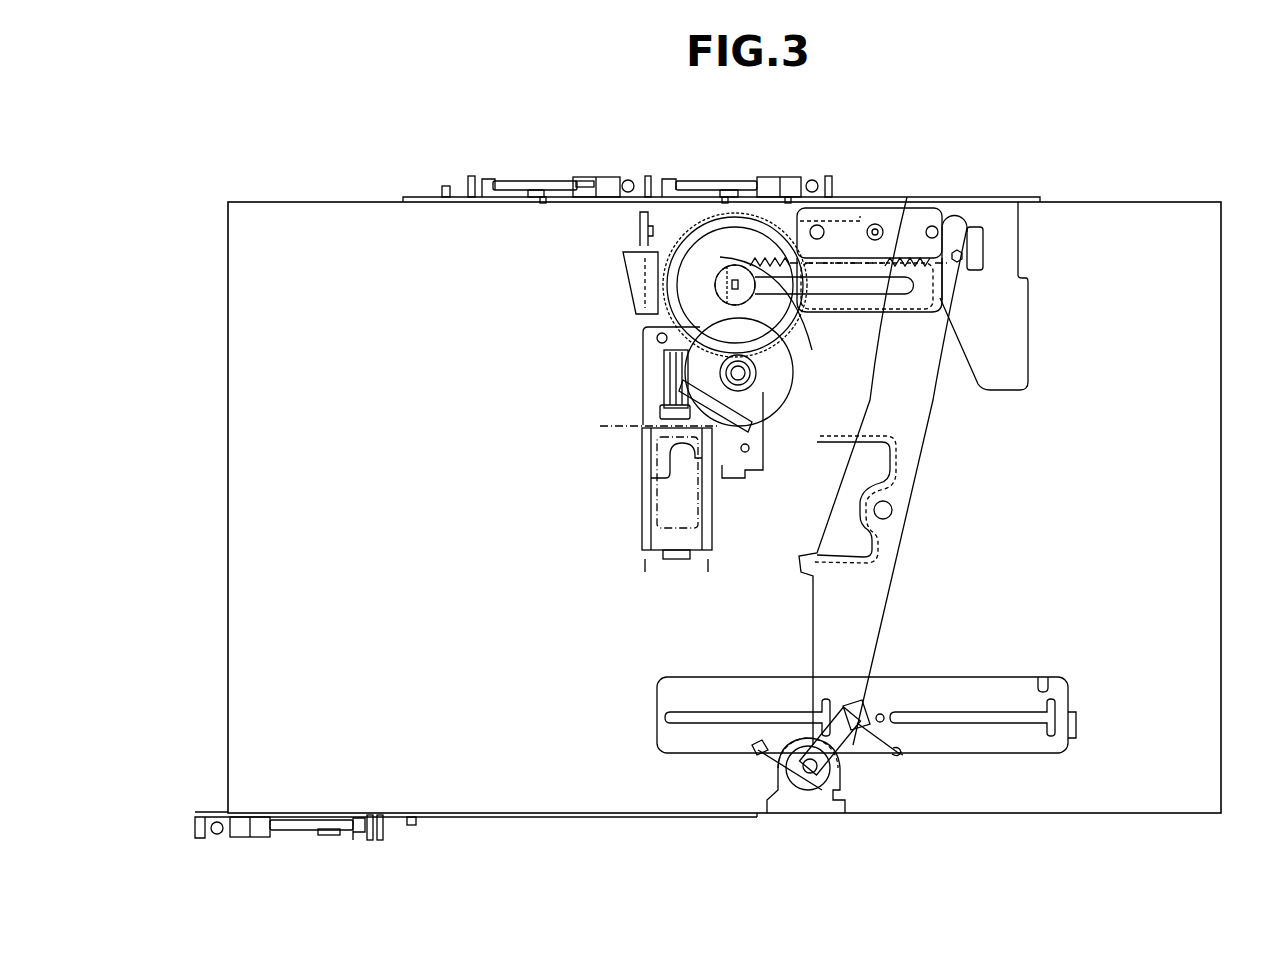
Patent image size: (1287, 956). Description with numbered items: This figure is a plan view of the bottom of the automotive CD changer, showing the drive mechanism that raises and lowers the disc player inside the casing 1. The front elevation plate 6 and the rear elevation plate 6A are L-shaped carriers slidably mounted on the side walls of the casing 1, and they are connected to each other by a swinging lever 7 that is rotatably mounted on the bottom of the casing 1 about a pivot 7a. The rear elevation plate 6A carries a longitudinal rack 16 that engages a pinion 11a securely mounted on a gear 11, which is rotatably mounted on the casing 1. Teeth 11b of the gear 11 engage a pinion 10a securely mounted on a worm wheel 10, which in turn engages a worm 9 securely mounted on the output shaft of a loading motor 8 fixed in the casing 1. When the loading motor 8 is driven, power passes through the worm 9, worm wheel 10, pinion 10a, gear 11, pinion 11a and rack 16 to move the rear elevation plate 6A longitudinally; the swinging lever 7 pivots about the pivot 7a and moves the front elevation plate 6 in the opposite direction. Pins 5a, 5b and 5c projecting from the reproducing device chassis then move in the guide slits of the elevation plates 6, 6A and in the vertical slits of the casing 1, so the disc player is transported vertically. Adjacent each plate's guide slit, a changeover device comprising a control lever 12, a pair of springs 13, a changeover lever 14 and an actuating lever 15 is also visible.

The casing 1 is at (1222, 598).
The pin 5a is at (413, 826).
The pin 5b is at (440, 186).
The pin 5c is at (647, 180).
The elevation plate 6 is at (787, 820).
The elevation plate 6A is at (1002, 222).
The swinging lever 7 is at (883, 592).
The pivot 7a is at (891, 511).
The loading motor 8 is at (662, 497).
The worm 9 is at (662, 386).
The worm wheel 10 is at (786, 400).
The pinion 10a is at (793, 372).
The gear 11 is at (758, 295).
The pinion 11a is at (713, 275).
The teeth 11b is at (622, 249).
The control lever 12 is at (575, 181).
The springs 13 is at (623, 182).
The changeover lever 14 is at (535, 196).
The actuating lever 15 is at (510, 181).
The rack 16 is at (907, 220).